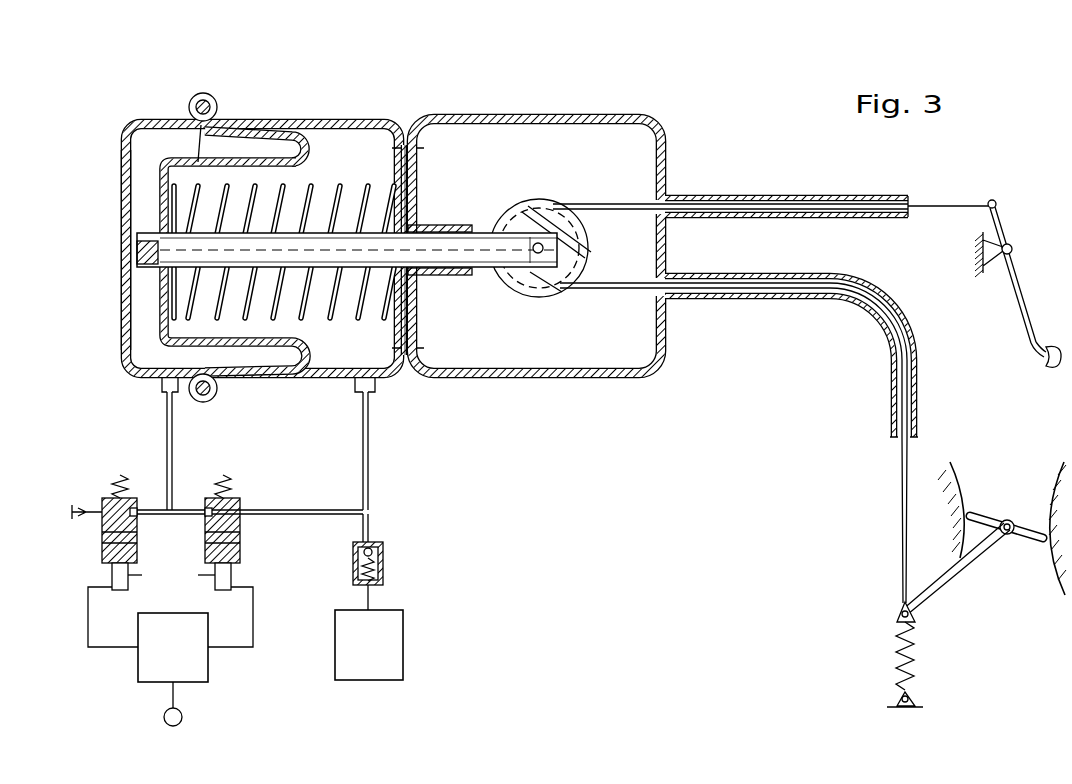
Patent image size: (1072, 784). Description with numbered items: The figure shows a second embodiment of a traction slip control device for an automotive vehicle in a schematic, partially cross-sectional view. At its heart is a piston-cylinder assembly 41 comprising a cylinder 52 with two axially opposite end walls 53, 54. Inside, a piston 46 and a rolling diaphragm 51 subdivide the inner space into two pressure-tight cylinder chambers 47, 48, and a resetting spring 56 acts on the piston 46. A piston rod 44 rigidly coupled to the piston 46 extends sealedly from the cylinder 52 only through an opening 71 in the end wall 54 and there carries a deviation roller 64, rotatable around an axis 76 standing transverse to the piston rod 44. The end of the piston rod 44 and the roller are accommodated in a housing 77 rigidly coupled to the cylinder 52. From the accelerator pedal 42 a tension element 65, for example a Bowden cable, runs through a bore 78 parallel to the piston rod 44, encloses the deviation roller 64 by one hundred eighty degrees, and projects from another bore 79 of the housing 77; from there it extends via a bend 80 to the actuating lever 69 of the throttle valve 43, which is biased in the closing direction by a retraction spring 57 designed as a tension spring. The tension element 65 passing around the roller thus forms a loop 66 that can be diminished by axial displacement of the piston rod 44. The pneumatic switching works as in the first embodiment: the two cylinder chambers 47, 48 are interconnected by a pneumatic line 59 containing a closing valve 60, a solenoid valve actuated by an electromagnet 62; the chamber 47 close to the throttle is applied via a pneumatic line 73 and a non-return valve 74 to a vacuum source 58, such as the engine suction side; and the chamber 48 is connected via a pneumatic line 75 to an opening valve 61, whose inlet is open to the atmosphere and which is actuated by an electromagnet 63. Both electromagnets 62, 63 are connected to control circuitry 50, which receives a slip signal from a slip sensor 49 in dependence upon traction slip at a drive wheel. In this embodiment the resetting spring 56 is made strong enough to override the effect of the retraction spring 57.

The piston-cylinder assembly 41 is at (137, 119).
The accelerator pedal 42 is at (1037, 352).
The throttle valve 43 is at (1027, 530).
The piston rod 44 is at (480, 252).
The piston 46 is at (198, 162).
The cylinder chamber 47 is at (390, 352).
The cylinder chamber 48 is at (143, 352).
The slip sensor 49 is at (164, 716).
The control circuitry 50 is at (193, 673).
The rolling diaphragm 51 is at (280, 133).
The cylinder 52 is at (237, 120).
The end wall 53 is at (122, 163).
The end wall 54 is at (400, 170).
The resetting spring 56 is at (315, 183).
The retraction spring 57 is at (917, 660).
The vacuum source 58 is at (335, 647).
The pneumatic line 59 is at (173, 457).
The closing valve 60 is at (240, 540).
The opening valve 61 is at (102, 540).
The electromagnet 62 is at (224, 592).
The electromagnet 63 is at (118, 592).
The deviation roller 64 is at (537, 205).
The tension element 65 is at (594, 207).
The loop 66 is at (594, 287).
The actuating lever 69 is at (932, 595).
The opening 71 is at (440, 233).
The pneumatic line 73 is at (370, 527).
The non-return valve 74 is at (353, 562).
The pneumatic line 75 is at (158, 514).
The axis 76 is at (537, 254).
The housing 77 is at (508, 118).
The bore 78 is at (668, 203).
The bore 79 is at (668, 280).
The bend 80 is at (892, 362).